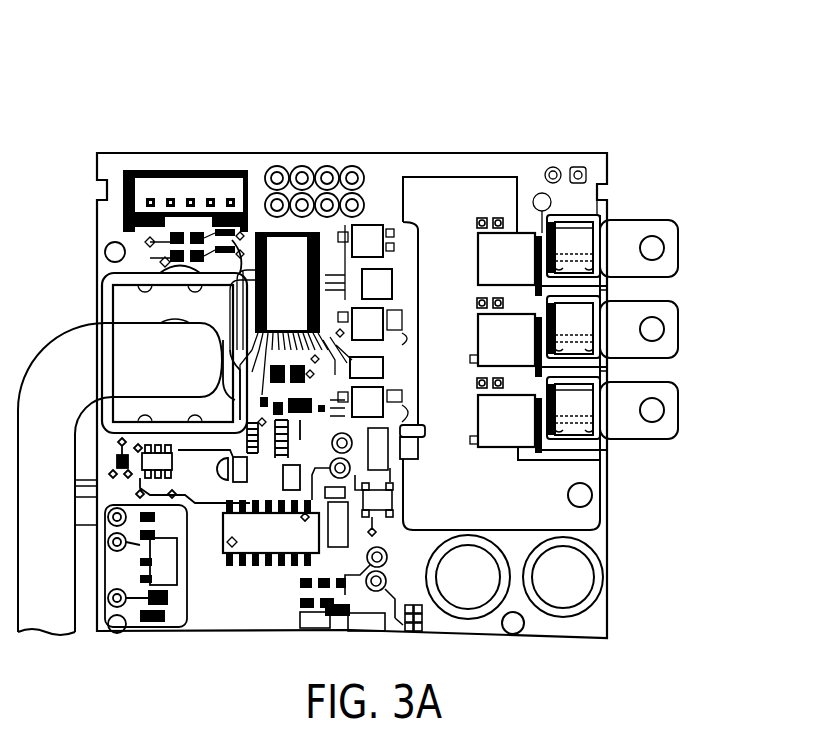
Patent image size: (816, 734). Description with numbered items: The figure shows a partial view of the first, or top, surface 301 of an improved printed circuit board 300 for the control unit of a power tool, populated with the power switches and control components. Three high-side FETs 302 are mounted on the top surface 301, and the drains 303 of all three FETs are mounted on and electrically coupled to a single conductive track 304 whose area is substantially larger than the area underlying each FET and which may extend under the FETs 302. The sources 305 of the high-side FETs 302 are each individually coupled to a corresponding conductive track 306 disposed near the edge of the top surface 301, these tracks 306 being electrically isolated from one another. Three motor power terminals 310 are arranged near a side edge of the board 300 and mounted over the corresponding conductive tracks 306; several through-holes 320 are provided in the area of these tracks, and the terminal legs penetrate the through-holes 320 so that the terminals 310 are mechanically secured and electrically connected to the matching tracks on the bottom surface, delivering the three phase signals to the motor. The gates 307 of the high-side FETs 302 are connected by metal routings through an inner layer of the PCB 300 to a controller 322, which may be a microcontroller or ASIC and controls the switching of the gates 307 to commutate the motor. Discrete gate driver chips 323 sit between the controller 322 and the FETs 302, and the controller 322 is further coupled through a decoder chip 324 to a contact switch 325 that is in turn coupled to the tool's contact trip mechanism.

The printed circuit board 300 is at (88, 108).
The first surface 301 is at (412, 168).
The high-side FETs 302 is at (497, 320).
The drains 303 is at (480, 360).
The conductive track 304 is at (513, 508).
The sources 305 is at (550, 342).
The conductive tracks 306 is at (572, 447).
The gates 307 is at (553, 247).
The motor power terminals 310 is at (673, 255).
The through-holes 320 is at (608, 187).
The controller 322 is at (290, 263).
The gate driver chips 323 is at (370, 400).
The decoder chip 324 is at (233, 525).
The contact switch 325 is at (130, 307).